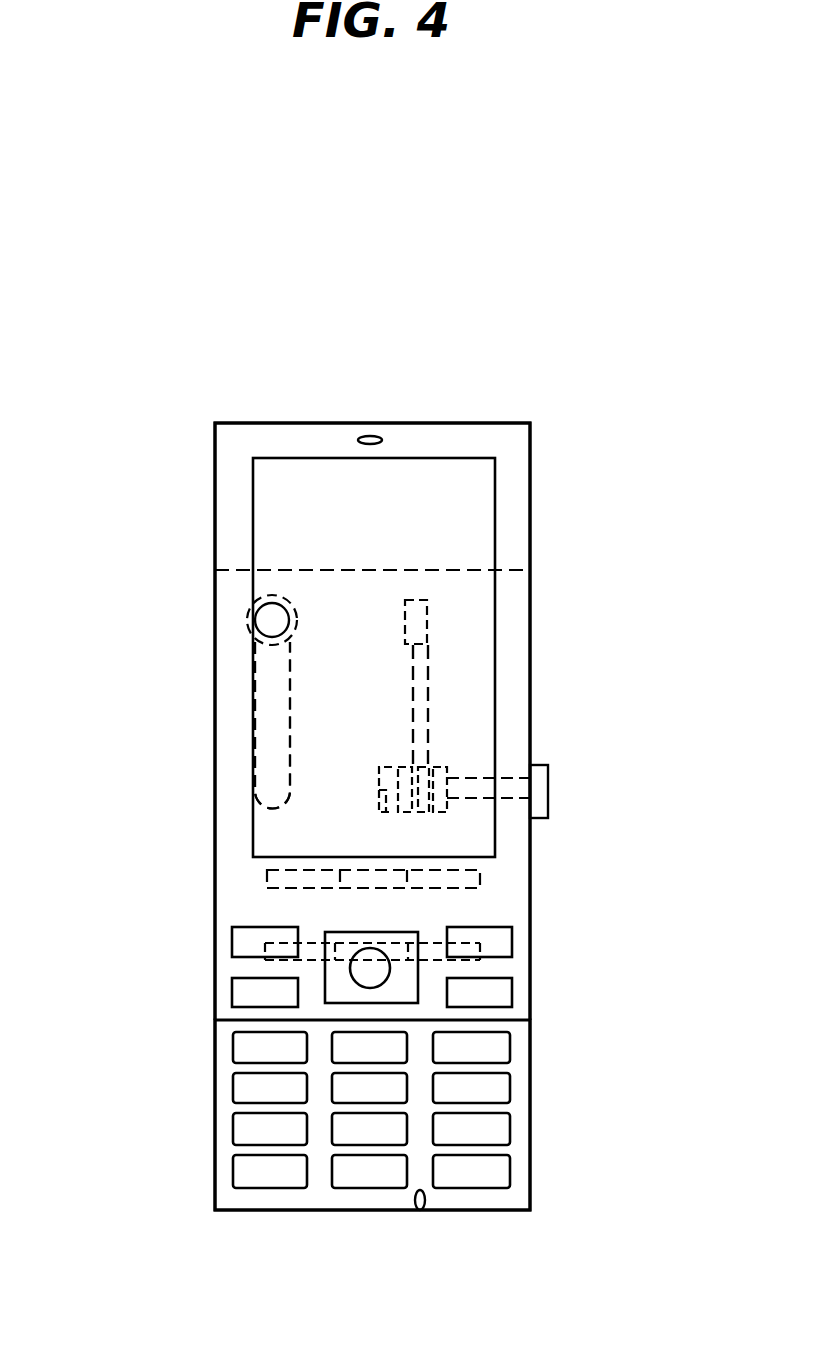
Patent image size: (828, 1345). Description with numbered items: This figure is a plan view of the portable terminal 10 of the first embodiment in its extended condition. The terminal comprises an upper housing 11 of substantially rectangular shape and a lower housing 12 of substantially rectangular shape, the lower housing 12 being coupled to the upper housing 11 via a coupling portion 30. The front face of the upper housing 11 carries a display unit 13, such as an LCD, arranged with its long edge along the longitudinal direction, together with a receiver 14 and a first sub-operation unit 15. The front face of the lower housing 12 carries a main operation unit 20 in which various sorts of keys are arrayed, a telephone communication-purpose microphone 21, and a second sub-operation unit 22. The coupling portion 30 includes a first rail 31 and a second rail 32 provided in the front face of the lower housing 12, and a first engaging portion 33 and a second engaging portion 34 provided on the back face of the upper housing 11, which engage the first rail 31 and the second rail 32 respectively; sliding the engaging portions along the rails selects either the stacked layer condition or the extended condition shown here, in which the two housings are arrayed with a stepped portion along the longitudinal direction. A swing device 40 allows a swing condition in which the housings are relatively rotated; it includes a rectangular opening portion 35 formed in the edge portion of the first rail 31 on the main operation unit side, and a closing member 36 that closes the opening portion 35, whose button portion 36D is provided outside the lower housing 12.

The portable terminal 10 is at (195, 386).
The upper housing 11 is at (215, 505).
The lower housing 12 is at (220, 1093).
The display unit 13 is at (465, 500).
The receiver 14 is at (370, 436).
The first sub-operation unit 15 is at (517, 963).
The main operation unit 20 is at (517, 1107).
The microphone 21 is at (420, 1212).
The second sub-operation unit 22 is at (467, 908).
The coupling portion 30 is at (470, 674).
The first rail 31 is at (423, 700).
The second rail 32 is at (262, 690).
The first engaging portion 33 is at (430, 620).
The second engaging portion 34 is at (247, 617).
The opening portion 35 is at (382, 763).
The closing member 36 is at (467, 778).
The button portion 36D is at (548, 797).
The swing device 40 is at (296, 815).